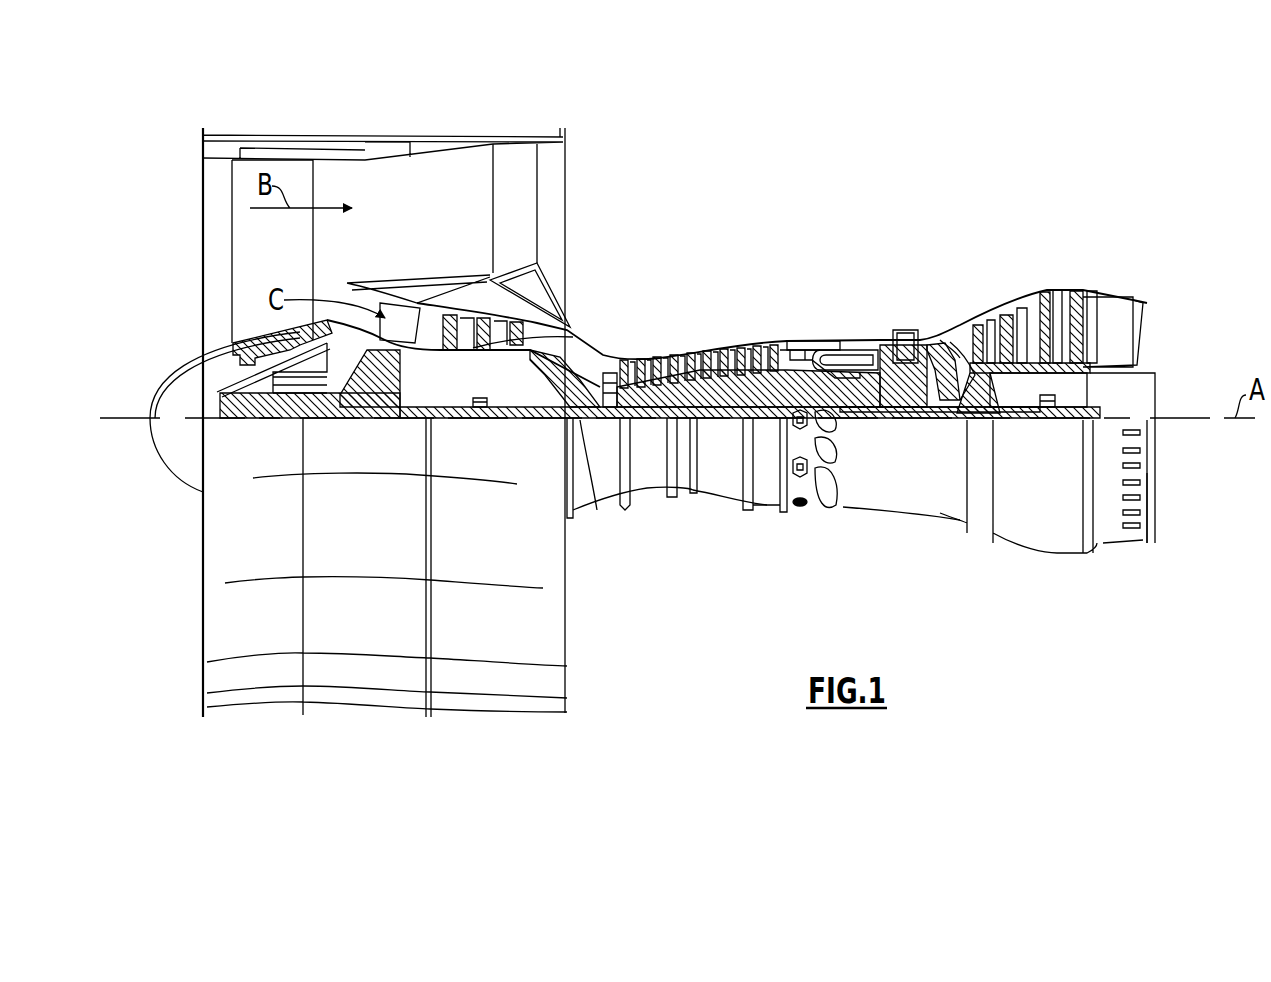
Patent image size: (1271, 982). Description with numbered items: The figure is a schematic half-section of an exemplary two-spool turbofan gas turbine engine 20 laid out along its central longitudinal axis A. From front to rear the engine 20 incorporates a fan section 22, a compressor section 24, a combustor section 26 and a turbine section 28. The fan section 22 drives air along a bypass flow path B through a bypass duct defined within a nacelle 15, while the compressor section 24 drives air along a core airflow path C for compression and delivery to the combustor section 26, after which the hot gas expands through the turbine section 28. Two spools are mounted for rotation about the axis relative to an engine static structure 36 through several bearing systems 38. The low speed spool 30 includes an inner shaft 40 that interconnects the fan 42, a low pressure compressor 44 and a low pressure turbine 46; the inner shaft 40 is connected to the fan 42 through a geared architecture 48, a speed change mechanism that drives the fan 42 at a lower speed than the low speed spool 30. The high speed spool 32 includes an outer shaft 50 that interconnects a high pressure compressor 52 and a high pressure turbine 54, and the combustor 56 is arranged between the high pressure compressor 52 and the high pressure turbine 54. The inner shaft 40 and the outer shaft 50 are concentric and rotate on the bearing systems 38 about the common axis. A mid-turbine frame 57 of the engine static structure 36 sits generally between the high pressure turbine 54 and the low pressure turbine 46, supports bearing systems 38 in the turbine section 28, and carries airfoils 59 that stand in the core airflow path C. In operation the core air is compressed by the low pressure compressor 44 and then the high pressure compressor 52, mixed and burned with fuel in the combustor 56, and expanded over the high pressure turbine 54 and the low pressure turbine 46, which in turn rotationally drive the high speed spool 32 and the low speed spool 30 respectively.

The nacelle 15 is at (385, 136).
The gas turbine engine 20 is at (843, 183).
The fan section 22 is at (320, 128).
The compressor section 24 is at (613, 325).
The combustor section 26 is at (838, 318).
The turbine section 28 is at (988, 277).
The low speed spool 30 is at (724, 420).
The high speed spool 32 is at (770, 390).
The engine static structure 36 is at (765, 505).
The bearing systems 38 is at (527, 400).
The inner shaft 40 is at (593, 418).
The fan 42 is at (288, 266).
The low pressure compressor 44 is at (480, 330).
The low pressure turbine 46 is at (1032, 315).
The geared architecture 48 is at (393, 400).
The outer shaft 50 is at (840, 413).
The high pressure compressor 52 is at (697, 390).
The high pressure turbine 54 is at (905, 345).
The combustor 56 is at (840, 362).
The mid-turbine frame 57 is at (948, 335).
The airfoils 59 is at (975, 365).